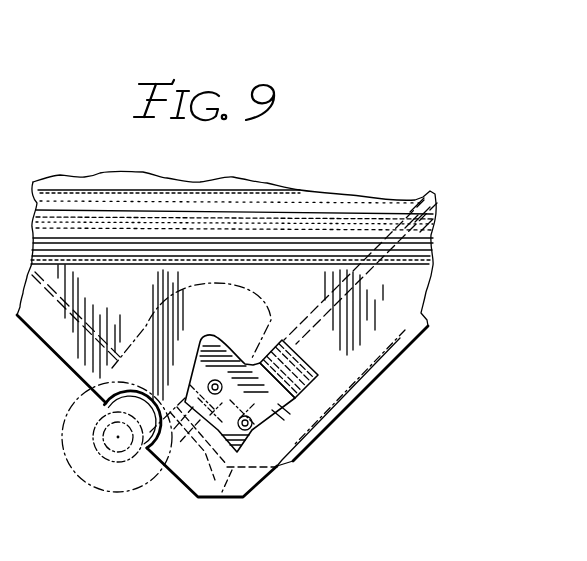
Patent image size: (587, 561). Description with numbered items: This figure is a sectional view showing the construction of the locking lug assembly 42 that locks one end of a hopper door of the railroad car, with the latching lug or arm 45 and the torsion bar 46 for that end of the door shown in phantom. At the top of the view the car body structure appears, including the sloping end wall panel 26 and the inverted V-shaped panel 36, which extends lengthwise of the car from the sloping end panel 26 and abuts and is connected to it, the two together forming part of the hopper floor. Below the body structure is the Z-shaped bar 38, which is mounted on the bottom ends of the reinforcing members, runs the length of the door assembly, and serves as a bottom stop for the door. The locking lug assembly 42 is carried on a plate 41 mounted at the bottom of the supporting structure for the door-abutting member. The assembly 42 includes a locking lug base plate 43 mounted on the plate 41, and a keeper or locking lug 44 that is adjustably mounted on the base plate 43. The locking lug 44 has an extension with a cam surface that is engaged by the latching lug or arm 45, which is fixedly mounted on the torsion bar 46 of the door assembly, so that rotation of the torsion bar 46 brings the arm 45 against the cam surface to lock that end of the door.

The sloping end wall panel 26 is at (318, 208).
The inverted V-shaped panel 36 is at (380, 242).
The Z-shaped bar 38 is at (222, 500).
The plate 41 is at (121, 298).
The locking lug assembly 42 is at (270, 433).
The locking lug base plate 43 is at (318, 376).
The keeper or locking lug 44 is at (277, 413).
The latching lug or arm 45 is at (206, 320).
The torsion bar 46 is at (95, 415).